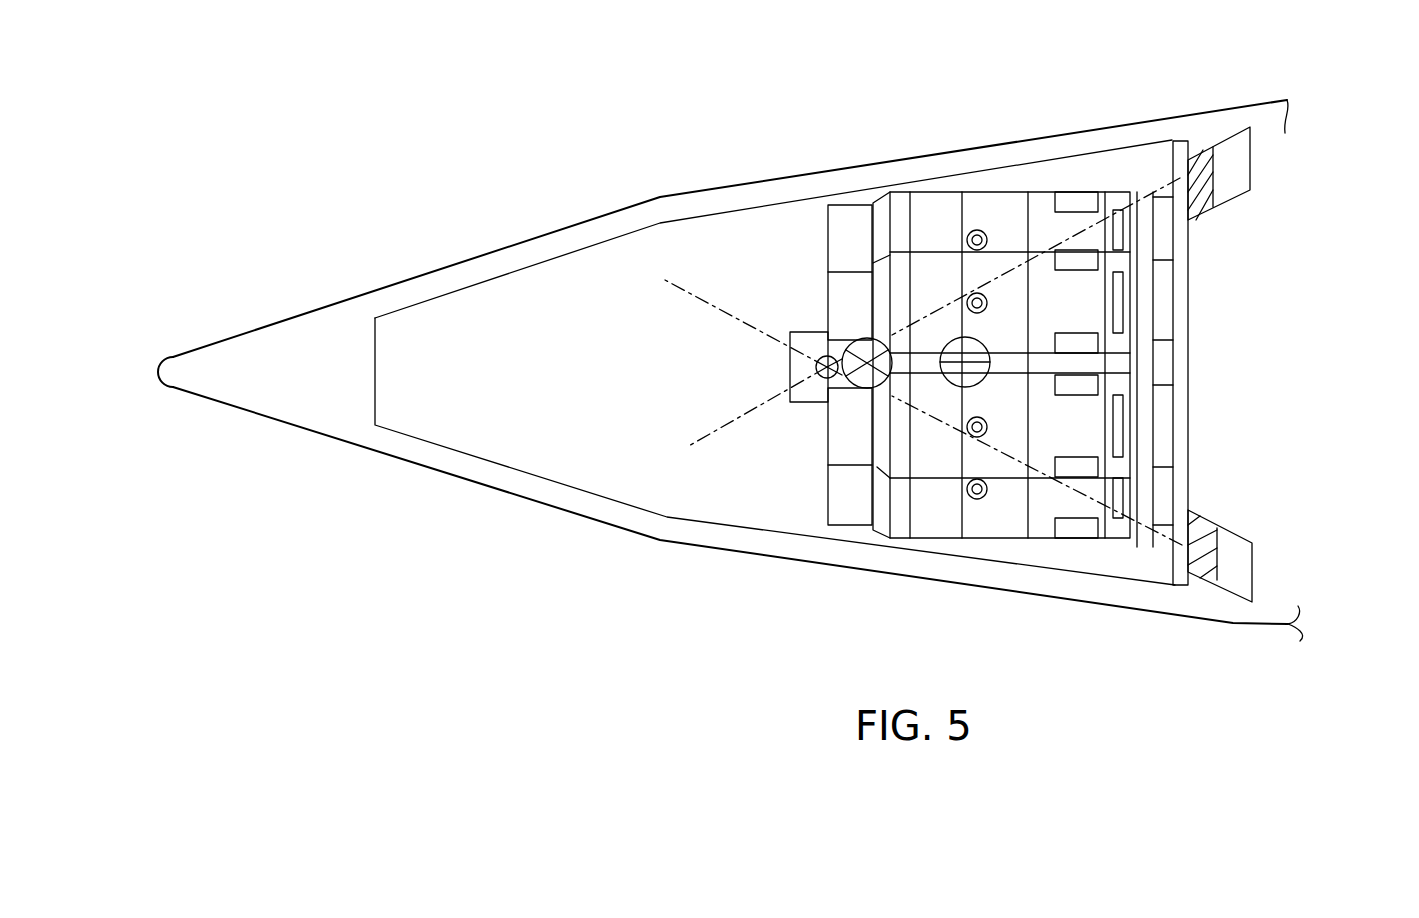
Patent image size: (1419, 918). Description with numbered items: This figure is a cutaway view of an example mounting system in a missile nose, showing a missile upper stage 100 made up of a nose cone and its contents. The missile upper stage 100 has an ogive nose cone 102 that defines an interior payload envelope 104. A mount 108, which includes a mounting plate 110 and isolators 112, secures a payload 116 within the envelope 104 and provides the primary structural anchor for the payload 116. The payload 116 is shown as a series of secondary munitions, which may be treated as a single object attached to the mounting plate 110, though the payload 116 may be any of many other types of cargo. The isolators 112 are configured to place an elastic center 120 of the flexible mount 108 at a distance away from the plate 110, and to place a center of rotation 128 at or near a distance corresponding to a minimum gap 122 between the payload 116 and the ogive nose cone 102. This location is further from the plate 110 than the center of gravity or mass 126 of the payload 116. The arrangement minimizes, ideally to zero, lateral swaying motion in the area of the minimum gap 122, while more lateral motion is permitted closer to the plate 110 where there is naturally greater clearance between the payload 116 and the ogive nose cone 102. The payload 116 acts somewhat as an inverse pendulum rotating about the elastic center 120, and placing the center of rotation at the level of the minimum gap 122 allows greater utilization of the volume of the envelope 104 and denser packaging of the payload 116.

The missile upper stage 100 is at (258, 275).
The ogive nose cone 102 is at (418, 448).
The interior payload envelope 104 is at (655, 254).
The mount 108 is at (1283, 252).
The mounting plate 110 is at (1180, 443).
The isolators 112 is at (1200, 150).
The payload 116 is at (1013, 182).
The elastic center 120 is at (830, 329).
The minimum gap 122 is at (845, 182).
The center of gravity or mass 126 is at (928, 338).
The center of rotation 128 is at (820, 376).